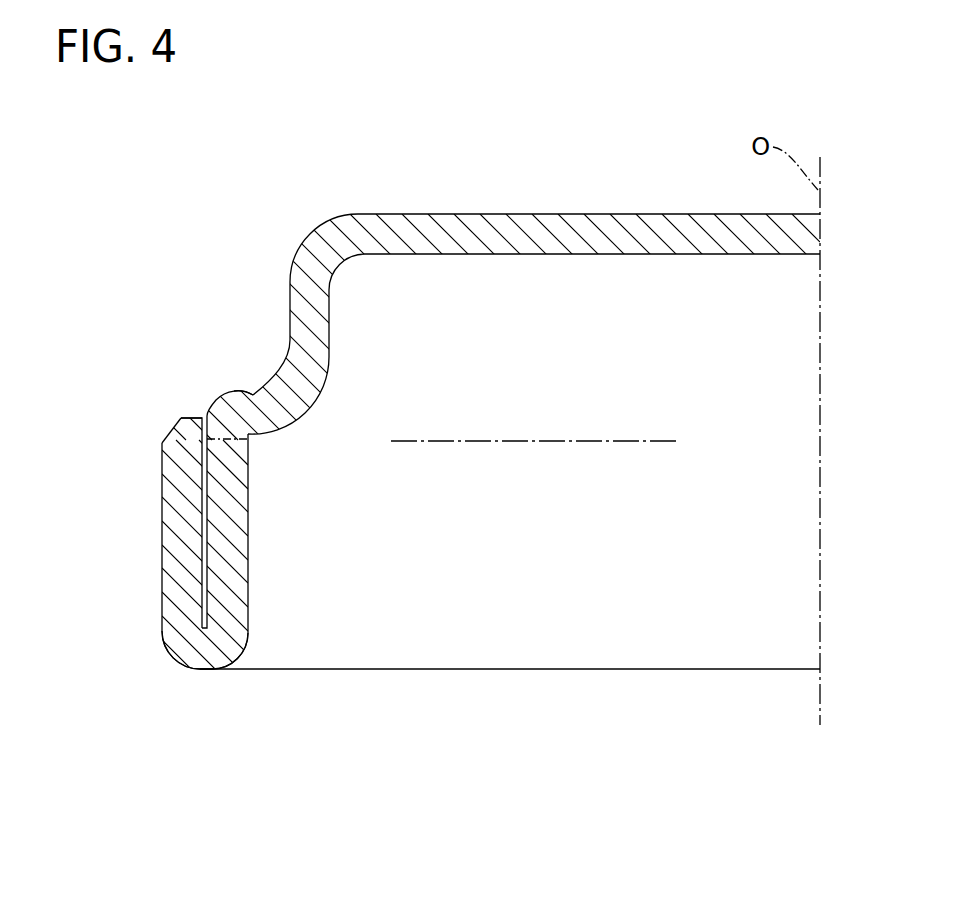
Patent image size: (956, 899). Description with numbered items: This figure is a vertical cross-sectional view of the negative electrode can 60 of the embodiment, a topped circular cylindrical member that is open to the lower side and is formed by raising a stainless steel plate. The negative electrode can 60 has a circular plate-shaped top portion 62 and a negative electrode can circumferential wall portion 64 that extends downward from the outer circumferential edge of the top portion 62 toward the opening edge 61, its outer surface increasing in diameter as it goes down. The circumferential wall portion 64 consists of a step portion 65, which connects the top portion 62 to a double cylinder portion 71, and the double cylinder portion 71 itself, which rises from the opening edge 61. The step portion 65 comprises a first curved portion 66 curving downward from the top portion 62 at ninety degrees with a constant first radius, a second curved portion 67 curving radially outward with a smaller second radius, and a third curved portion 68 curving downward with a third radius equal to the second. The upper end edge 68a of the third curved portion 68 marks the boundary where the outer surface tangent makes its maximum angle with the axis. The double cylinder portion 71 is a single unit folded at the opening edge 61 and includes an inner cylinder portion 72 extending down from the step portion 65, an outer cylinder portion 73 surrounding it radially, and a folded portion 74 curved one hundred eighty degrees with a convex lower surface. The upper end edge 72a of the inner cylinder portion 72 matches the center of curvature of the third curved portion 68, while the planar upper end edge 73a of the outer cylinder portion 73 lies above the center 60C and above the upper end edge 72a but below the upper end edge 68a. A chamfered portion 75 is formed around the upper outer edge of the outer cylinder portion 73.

The negative electrode can 60 is at (671, 204).
The center between both ends of the negative electrode can 60C is at (640, 441).
The opening edge 61 is at (200, 670).
The top portion 62 is at (560, 230).
The negative electrode can circumferential wall portion 64 is at (160, 372).
The step portion 65 is at (332, 140).
The first curved portion 66 is at (313, 235).
The second curved portion 67 is at (282, 373).
The third curved portion 68 is at (217, 408).
The upper end edge of the third curved portion 68a is at (240, 393).
The double cylinder portion 71 is at (150, 512).
The inner cylinder portion 72 is at (237, 535).
The upper end edge of the inner cylinder portion 72a is at (262, 422).
The outer cylinder portion 73 is at (172, 549).
The upper end edge of the outer cylinder portion 73a is at (185, 413).
The folded portion 74 is at (212, 655).
The chamfered portion 75 is at (172, 428).